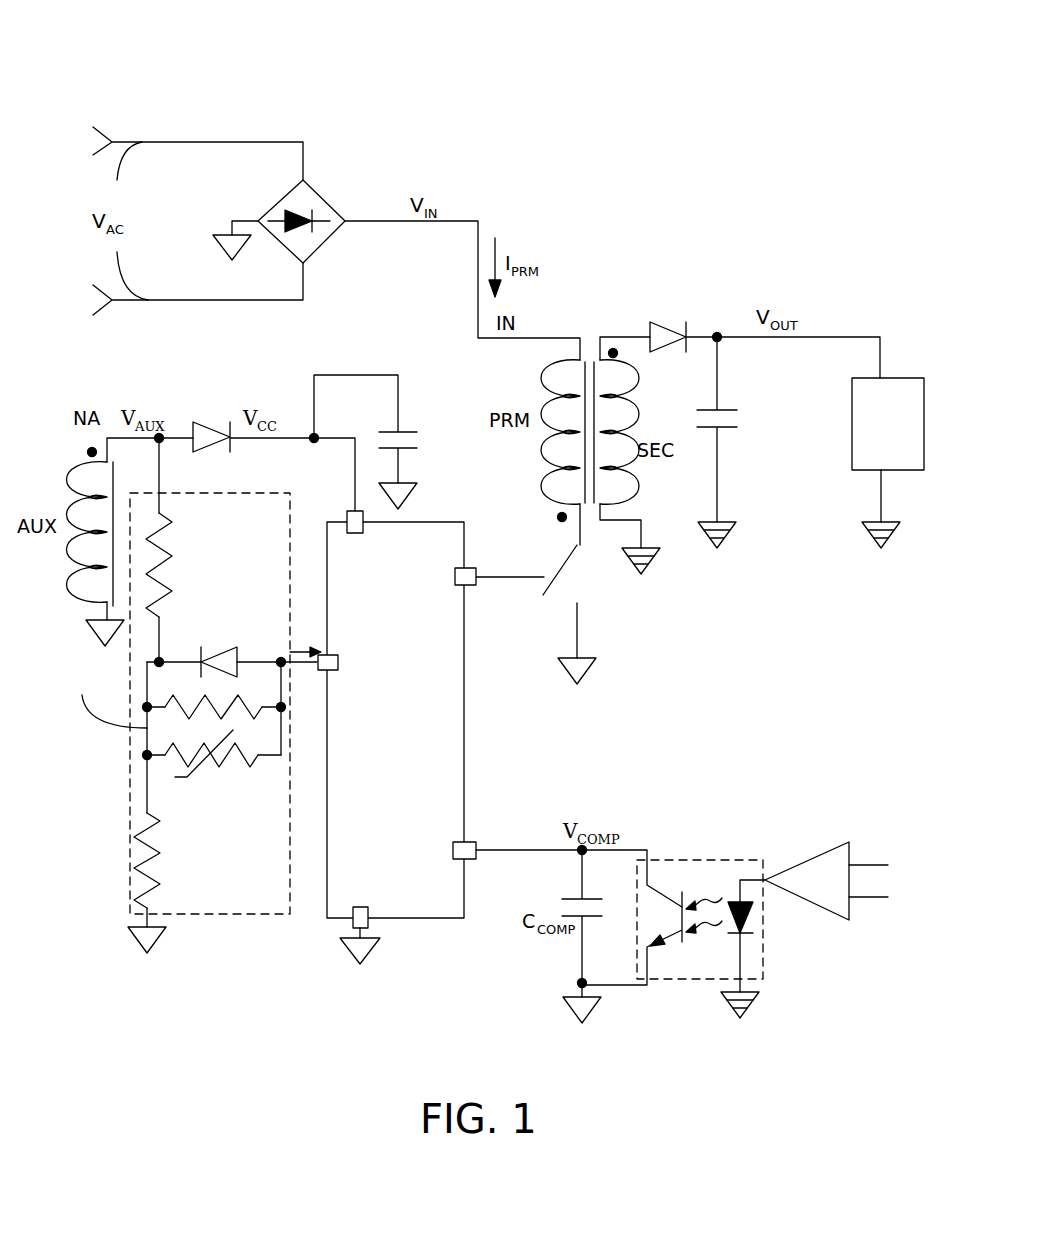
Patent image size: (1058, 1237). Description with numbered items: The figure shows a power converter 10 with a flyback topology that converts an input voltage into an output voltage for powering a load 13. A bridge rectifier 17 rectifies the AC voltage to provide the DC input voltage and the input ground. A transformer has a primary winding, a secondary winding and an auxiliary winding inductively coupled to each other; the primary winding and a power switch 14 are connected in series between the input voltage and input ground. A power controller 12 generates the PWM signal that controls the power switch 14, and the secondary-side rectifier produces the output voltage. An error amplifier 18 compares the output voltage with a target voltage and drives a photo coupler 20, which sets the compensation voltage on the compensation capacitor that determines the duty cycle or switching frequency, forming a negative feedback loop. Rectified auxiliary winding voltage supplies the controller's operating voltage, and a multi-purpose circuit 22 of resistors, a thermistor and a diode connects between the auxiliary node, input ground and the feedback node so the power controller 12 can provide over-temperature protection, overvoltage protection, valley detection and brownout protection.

The power converter 10 is at (471, 66).
The bridge rectifier 17 is at (310, 180).
The load 13 is at (897, 431).
The power switch 14 is at (585, 573).
The power controller 12 is at (408, 733).
The multi-purpose circuit 22 is at (130, 817).
The error amplifier 18 is at (830, 848).
The photo coupler 20 is at (700, 860).